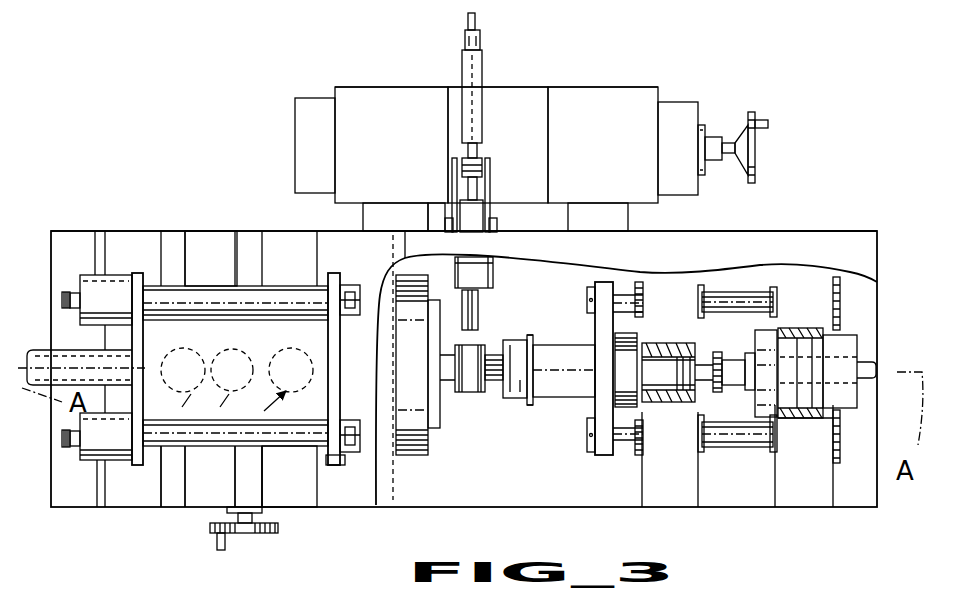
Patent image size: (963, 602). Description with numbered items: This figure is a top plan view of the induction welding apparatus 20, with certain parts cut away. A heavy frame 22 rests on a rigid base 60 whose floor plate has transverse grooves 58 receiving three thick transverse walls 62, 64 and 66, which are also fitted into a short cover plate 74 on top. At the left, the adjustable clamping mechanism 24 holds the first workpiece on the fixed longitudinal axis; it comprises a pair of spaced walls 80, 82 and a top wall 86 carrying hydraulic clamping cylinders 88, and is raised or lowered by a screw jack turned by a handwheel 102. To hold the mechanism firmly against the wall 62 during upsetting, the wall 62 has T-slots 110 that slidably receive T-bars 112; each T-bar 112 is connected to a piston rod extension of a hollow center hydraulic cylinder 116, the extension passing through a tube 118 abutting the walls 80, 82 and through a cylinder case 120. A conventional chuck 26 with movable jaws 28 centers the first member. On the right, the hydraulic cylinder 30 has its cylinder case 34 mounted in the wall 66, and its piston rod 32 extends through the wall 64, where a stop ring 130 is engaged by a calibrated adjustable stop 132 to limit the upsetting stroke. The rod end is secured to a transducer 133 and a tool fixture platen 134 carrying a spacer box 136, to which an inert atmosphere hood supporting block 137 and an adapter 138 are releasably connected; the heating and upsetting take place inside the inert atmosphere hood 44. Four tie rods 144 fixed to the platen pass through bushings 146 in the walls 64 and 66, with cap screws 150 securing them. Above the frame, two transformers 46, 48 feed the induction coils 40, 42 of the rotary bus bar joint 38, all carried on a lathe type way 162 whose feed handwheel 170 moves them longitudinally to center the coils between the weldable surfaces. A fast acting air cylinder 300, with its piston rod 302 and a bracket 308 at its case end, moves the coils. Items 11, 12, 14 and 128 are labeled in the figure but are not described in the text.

The induction welding apparatus 20 is at (668, 72).
The rigid base 60 is at (54, 504).
The heavy frame 22 is at (229, 227).
The cover plate 74 is at (802, 233).
The transverse grooves 58 is at (150, 497).
The transverse wall 64 is at (663, 505).
The transverse wall 66 is at (787, 505).
The tube 118 is at (200, 292).
The transverse wall 62 is at (393, 500).
The transformer 46 is at (365, 152).
The transformer 48 is at (580, 123).
The piston rod 302 is at (479, 155).
The lathe type way 162 is at (320, 97).
The cap screws 150 is at (591, 286).
The fast acting air cylinder 300 is at (482, 61).
The bracket 308 is at (477, 23).
The rotary bus bar joint 38 is at (495, 208).
The feed handwheel 170 is at (748, 110).
The spaced wall 80 is at (137, 272).
The cylinder case 120 is at (90, 314).
The hollow center hydraulic cylinder 116 is at (93, 272).
The nut 14 is at (63, 296).
The shaft end 12 is at (70, 306).
The shaft 11 is at (60, 351).
The adjustable clamping mechanism 24 is at (272, 322).
The top wall 86 is at (232, 349).
The hydraulic clamping cylinders 88 is at (234, 437).
The spaced wall 82 is at (334, 273).
The T-bars 112 is at (345, 287).
The T-slots 110 is at (352, 290).
The chuck 26 is at (434, 468).
The movable jaws 28 is at (479, 398).
The inert atmosphere hood 44 is at (500, 392).
The induction coil 40 is at (480, 302).
The induction coil 42 is at (480, 322).
The inert atmosphere hood supporting block 137 is at (518, 395).
The adapter 138 is at (530, 406).
The transducer 133 is at (617, 358).
The spacer box 136 is at (547, 340).
The tool fixture platen 134 is at (592, 282).
The bushings 146 is at (640, 283).
The tie rods 144 is at (752, 291).
The calibrated adjustable stop 132 is at (720, 285).
The stop ring 130 is at (703, 343).
The piston rod 32 is at (696, 396).
The gear 128 is at (820, 327).
The hydraulic cylinder 30 is at (852, 332).
The cylinder case 34 is at (790, 409).
The handwheel 102 is at (247, 535).